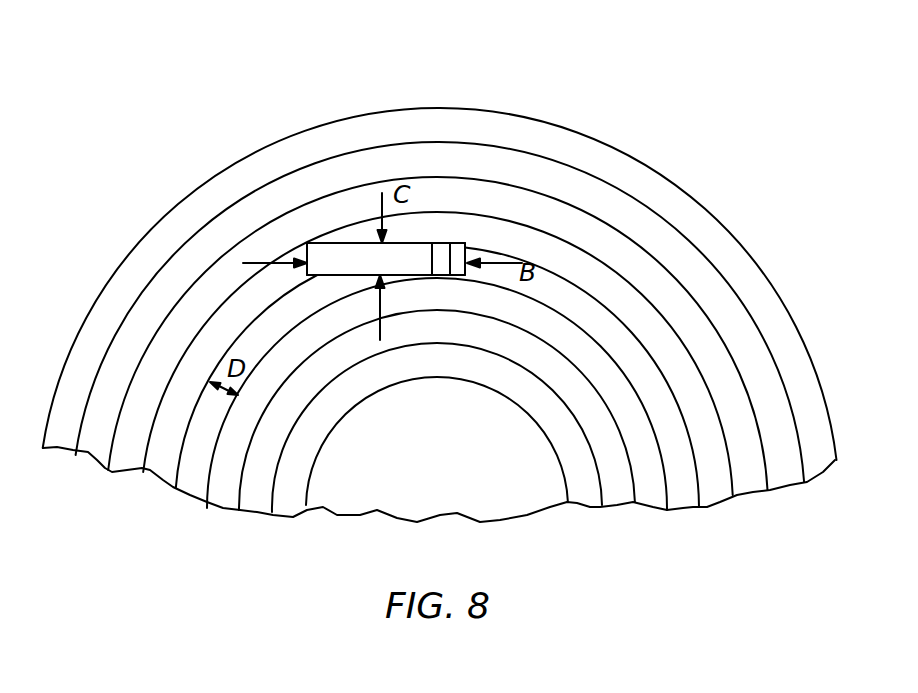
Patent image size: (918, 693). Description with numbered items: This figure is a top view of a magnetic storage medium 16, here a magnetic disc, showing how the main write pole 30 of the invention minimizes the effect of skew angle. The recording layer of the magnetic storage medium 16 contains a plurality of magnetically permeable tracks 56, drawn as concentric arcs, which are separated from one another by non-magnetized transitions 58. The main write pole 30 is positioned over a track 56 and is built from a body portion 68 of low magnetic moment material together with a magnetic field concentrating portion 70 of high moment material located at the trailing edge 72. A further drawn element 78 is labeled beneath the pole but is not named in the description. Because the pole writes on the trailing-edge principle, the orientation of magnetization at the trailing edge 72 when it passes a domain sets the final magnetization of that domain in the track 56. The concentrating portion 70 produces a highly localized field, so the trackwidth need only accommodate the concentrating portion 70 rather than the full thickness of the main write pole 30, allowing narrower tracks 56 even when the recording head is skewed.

The magnetic storage medium 16 is at (656, 122).
The main write pole 30 is at (352, 267).
The magnetically permeable tracks 56 is at (582, 323).
The non-magnetized transitions 58 is at (640, 338).
The body portion 68 is at (316, 258).
The magnetic field concentrating portion 70 is at (458, 253).
The trailing edge 72 is at (468, 250).
The core region 78 is at (440, 277).